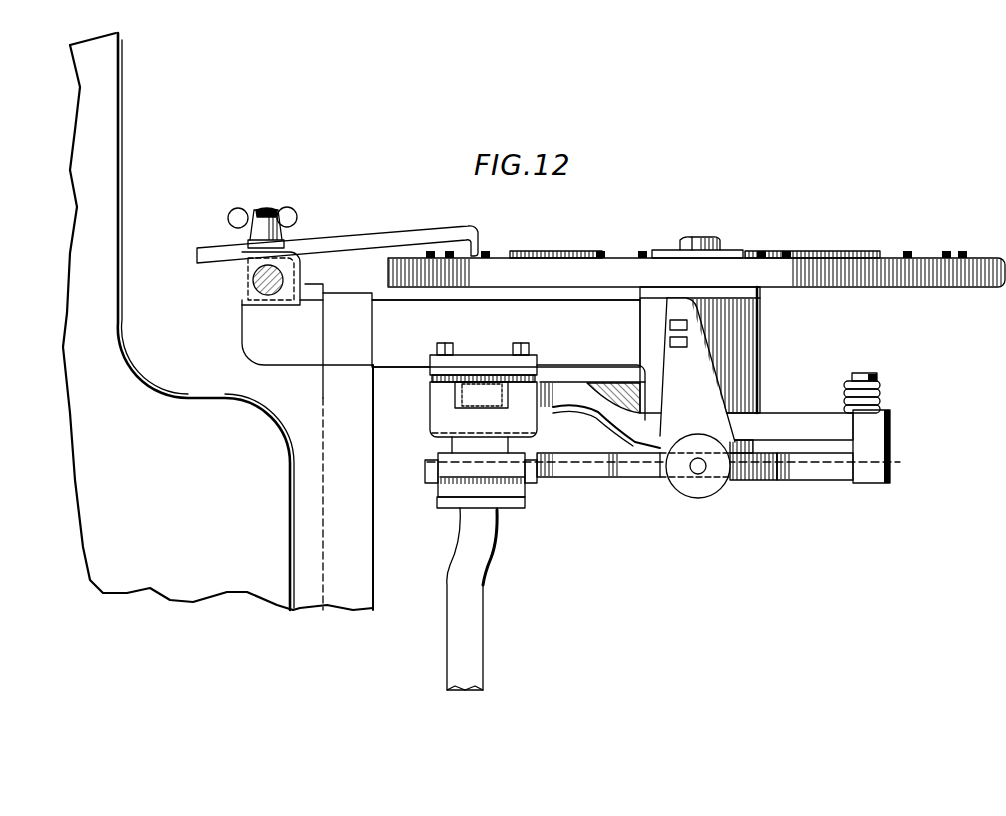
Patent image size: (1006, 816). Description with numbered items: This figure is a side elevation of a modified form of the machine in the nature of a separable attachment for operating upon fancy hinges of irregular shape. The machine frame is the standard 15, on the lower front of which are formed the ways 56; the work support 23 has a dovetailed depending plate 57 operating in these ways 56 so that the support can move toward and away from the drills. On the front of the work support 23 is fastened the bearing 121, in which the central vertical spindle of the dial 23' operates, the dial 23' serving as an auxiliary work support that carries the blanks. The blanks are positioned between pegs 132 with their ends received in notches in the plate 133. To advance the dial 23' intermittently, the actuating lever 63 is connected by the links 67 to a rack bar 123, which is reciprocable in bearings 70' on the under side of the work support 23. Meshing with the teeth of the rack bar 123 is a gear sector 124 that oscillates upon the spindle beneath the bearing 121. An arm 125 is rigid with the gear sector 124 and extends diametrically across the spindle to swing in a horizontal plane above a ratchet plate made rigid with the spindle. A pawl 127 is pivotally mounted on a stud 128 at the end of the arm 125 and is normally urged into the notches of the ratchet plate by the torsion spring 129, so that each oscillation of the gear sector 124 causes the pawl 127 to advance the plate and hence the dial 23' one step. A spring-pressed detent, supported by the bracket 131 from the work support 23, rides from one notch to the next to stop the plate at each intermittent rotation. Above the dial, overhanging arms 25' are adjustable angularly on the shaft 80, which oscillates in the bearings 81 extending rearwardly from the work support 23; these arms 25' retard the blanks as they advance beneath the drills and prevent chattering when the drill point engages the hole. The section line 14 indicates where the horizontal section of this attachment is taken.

The section line 14 is at (313, 294).
The standard 15 is at (105, 248).
The work support 23 is at (516, 292).
The dial 23' is at (429, 298).
The overhanging arms 25' is at (337, 231).
The ways 56 is at (362, 594).
The depending plate 57 is at (335, 382).
The lever 63 is at (463, 623).
The links 67 is at (443, 465).
The bearings 70' is at (458, 426).
The shaft 80 is at (260, 278).
The bearings 81 is at (258, 332).
The bearing 121 is at (757, 367).
The rack bar 123 is at (473, 383).
The gear sector 124 is at (555, 412).
The arm 125 is at (788, 420).
The pawl 127 is at (815, 470).
The stud 128 is at (867, 373).
The torsion spring 129 is at (880, 384).
The bracket 131 is at (663, 417).
The pegs 132 is at (910, 257).
The plate 133 is at (562, 253).